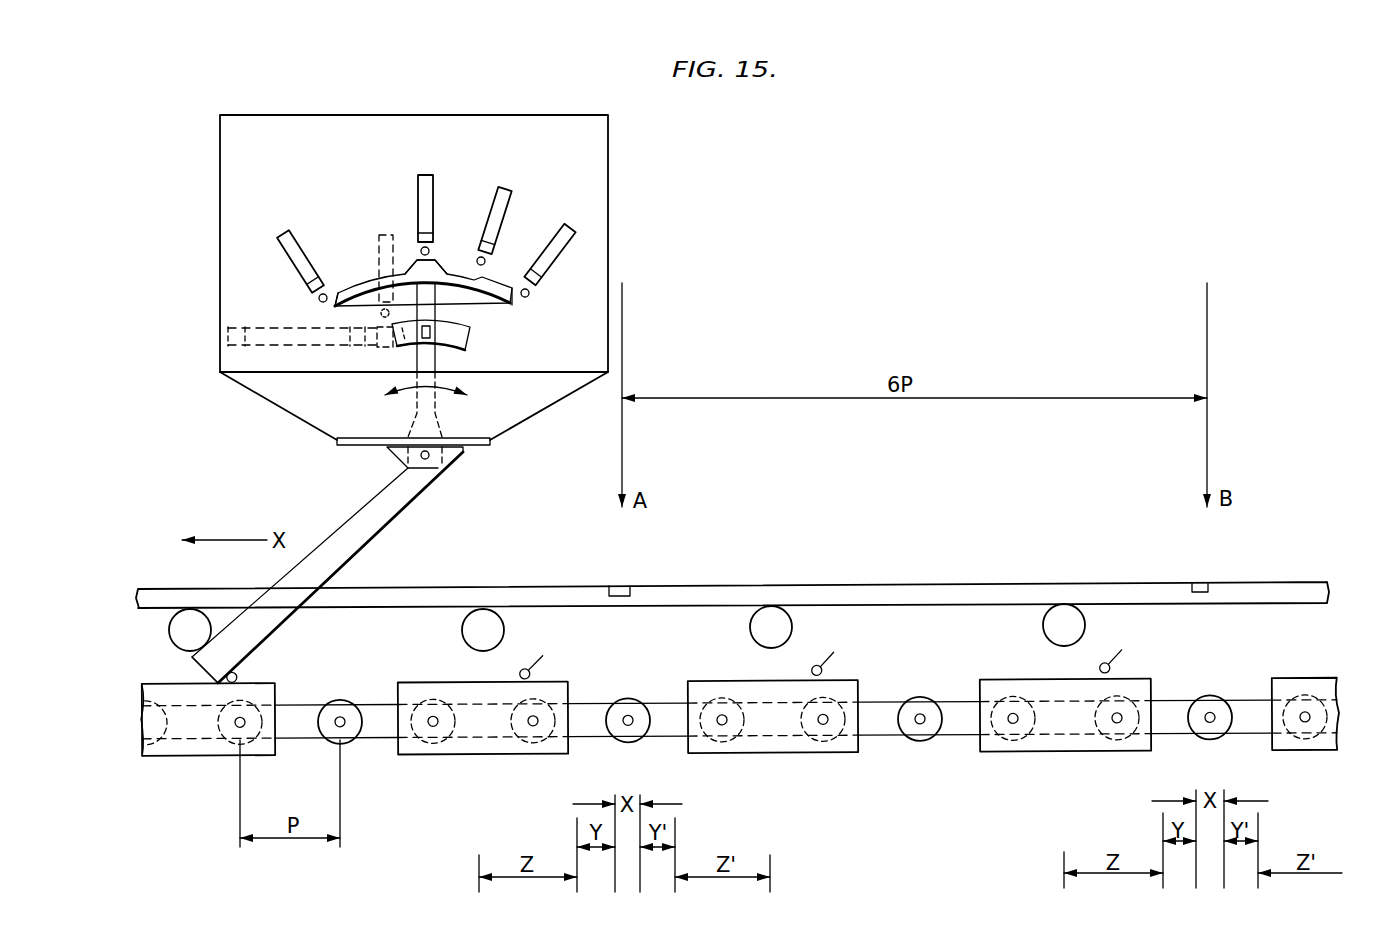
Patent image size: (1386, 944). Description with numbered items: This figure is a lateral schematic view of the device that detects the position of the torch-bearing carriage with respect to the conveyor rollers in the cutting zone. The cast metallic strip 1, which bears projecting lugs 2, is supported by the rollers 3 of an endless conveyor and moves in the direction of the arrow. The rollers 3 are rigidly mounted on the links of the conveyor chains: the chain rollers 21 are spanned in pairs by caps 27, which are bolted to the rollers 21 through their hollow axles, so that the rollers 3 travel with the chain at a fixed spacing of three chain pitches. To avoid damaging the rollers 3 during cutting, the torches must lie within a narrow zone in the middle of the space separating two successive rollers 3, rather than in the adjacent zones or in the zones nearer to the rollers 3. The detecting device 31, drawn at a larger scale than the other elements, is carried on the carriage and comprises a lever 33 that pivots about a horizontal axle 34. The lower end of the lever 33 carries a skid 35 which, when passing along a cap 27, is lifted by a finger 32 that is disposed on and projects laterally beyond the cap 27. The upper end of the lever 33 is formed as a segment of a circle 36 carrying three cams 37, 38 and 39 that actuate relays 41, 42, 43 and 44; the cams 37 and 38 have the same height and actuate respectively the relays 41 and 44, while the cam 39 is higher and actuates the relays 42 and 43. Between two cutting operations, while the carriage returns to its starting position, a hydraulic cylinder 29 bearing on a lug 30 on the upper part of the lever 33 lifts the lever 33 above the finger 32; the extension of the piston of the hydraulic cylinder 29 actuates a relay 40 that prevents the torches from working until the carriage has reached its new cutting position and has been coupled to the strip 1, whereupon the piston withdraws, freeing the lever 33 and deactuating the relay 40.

The metallic strip 1 is at (910, 583).
The projecting lug 2 is at (627, 585).
The roller 3 is at (793, 626).
The chain roller 21 is at (437, 746).
The cap 27 is at (277, 694).
The hydraulic cylinder 29 is at (282, 346).
The lug 30 is at (438, 338).
The detecting device 31 is at (608, 221).
The finger 32 is at (240, 673).
The lever 33 is at (378, 530).
The horizontal axle 34 is at (428, 458).
The skid 35 is at (190, 660).
The segment of a circle 36 is at (452, 284).
The cam 37 is at (360, 290).
The cam 38 is at (512, 300).
The cam 39 is at (441, 276).
The relay 40 is at (378, 236).
The relay 41 is at (280, 256).
The relay 42 is at (418, 182).
The relay 43 is at (493, 186).
The relay 44 is at (557, 225).